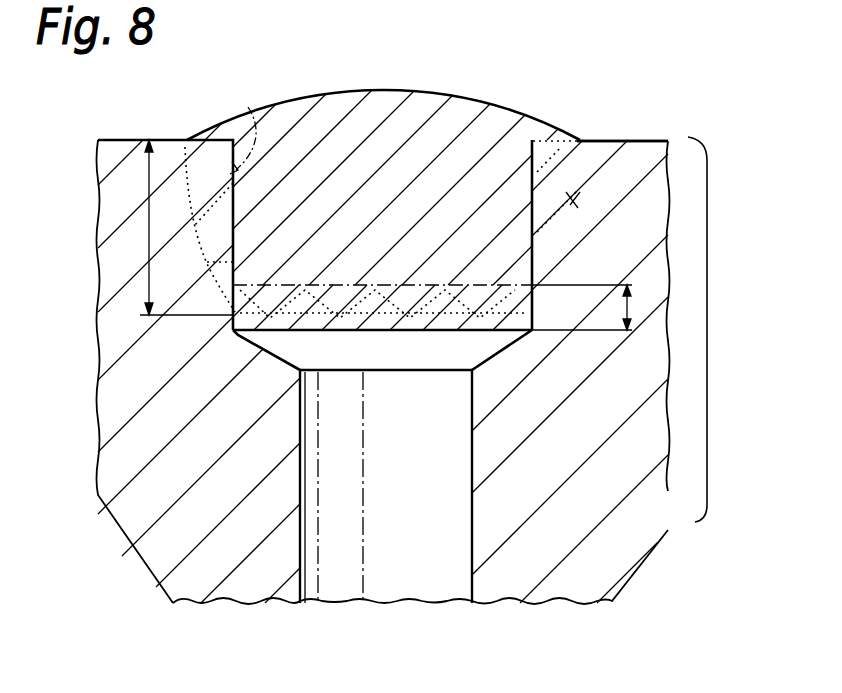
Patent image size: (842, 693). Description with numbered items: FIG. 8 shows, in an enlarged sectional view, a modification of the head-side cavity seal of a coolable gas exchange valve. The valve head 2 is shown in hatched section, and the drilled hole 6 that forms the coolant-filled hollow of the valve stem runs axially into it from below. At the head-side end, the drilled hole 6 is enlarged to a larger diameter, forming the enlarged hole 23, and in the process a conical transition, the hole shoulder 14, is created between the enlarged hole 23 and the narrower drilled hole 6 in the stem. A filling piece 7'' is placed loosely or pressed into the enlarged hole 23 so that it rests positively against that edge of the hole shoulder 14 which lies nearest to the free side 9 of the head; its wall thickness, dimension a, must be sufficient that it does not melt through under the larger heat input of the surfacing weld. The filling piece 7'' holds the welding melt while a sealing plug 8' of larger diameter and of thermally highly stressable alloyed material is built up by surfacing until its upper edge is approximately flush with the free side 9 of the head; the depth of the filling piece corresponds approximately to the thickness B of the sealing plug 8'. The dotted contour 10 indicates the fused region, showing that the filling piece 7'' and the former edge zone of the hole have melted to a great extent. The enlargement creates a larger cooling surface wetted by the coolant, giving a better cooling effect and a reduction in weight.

The valve head 2 is at (415, 370).
The drilled hole 6 is at (470, 573).
The filling piece 7'' is at (382, 367).
The sealing plug 8' is at (383, 168).
The free side of the head 9 is at (645, 130).
The contour of the fused region 10 is at (552, 287).
The hole shoulder 14 is at (486, 344).
The enlarged hole 23 is at (248, 107).
The thickness of the sealing plug B is at (179, 227).
The wall thickness of the filling piece a is at (582, 307).